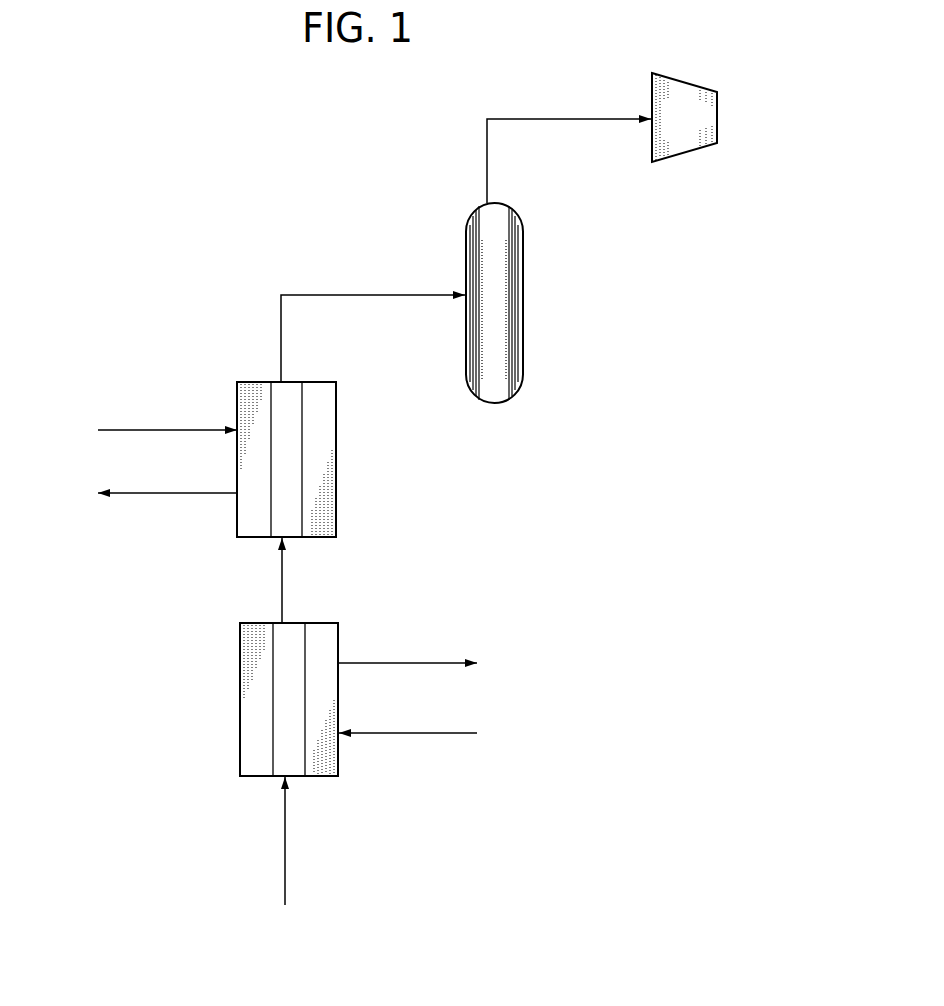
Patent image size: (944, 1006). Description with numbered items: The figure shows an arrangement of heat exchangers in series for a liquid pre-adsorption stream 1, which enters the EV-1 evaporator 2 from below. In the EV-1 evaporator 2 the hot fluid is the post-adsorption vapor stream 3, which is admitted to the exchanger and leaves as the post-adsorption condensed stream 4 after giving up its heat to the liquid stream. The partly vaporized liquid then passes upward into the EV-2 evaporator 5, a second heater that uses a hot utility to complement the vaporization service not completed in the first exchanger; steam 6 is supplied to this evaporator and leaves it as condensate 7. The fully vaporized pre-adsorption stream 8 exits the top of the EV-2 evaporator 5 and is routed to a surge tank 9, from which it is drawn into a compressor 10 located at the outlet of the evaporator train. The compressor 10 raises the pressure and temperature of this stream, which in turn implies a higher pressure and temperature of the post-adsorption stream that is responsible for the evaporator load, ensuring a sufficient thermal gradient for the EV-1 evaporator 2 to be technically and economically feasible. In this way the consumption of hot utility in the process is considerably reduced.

The liquid pre-adsorption stream 1 is at (288, 865).
The EV-1 evaporator 2 is at (272, 699).
The post-adsorption vapor stream 3 is at (424, 731).
The post-adsorption condensed stream 4 is at (424, 663).
The EV-2 evaporator 5 is at (304, 459).
The steam 6 is at (148, 431).
The condensate 7 is at (148, 498).
The vaporized pre-adsorption stream 8 is at (358, 322).
The surge tank 9 is at (508, 303).
The compressor 10 is at (716, 117).